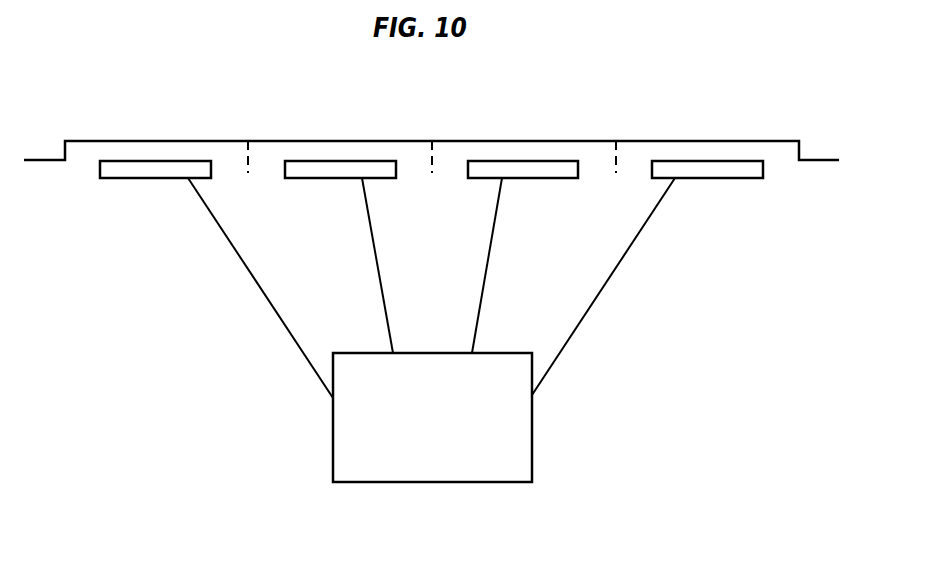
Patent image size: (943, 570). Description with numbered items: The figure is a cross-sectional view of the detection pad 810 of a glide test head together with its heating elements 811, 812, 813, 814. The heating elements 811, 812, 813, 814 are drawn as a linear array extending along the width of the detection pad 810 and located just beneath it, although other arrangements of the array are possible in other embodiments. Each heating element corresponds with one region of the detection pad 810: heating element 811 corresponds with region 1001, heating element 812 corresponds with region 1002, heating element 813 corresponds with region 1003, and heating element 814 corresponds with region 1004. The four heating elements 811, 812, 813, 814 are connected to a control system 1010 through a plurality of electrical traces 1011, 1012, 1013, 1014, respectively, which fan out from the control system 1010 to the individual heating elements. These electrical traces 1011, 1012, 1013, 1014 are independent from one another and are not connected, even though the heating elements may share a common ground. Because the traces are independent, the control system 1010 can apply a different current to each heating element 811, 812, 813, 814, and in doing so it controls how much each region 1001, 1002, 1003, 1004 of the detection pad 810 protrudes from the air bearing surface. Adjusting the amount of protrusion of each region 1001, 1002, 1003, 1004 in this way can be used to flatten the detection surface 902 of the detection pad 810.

The detection surface 902 is at (434, 126).
The detection pad 810 is at (181, 141).
The heating element 811 is at (123, 179).
The heating element 812 is at (315, 179).
The heating element 813 is at (536, 179).
The heating element 814 is at (730, 179).
The region 1001 is at (97, 147).
The region 1002 is at (283, 147).
The region 1003 is at (574, 147).
The region 1004 is at (767, 147).
The control system 1010 is at (454, 461).
The electrical trace 1011 is at (272, 312).
The electrical trace 1012 is at (382, 293).
The electrical trace 1013 is at (481, 300).
The electrical trace 1014 is at (588, 310).